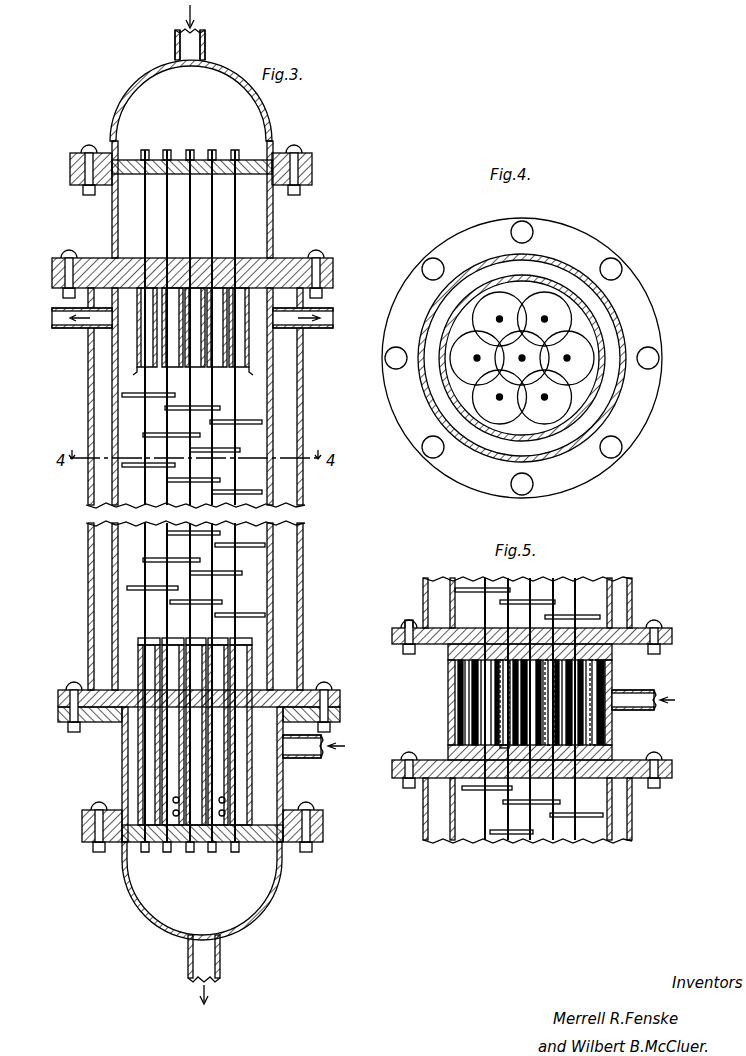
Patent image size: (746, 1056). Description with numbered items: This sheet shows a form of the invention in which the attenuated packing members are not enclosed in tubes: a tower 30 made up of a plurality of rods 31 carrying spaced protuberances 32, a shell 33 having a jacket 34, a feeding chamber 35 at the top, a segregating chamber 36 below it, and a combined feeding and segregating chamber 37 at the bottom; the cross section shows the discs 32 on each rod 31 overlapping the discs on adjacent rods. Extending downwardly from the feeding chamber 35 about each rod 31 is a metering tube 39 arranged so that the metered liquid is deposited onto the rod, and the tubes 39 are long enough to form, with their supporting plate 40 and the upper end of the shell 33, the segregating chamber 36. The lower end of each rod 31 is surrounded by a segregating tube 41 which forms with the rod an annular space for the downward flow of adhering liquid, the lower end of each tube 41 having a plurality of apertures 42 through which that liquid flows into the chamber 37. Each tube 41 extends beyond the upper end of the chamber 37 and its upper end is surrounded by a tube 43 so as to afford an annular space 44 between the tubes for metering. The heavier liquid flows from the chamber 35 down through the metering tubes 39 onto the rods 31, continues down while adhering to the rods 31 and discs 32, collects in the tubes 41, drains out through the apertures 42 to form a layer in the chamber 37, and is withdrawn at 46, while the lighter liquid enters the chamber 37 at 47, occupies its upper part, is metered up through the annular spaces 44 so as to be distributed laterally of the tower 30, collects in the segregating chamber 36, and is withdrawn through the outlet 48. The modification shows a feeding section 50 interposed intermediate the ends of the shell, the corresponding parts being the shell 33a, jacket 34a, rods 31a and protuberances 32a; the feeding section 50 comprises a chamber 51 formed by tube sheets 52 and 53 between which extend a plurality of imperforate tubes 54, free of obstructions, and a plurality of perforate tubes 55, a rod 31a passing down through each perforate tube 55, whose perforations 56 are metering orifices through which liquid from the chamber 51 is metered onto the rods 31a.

In FIG. 3, the tower 30 is at (303, 528).
In FIG. 4, the tower 30 is at (647, 276).
In FIG. 3, the rods 31 is at (145, 568).
In FIG. 4, the rods 31 is at (499, 398).
In FIG. 3, the protuberances 32 is at (258, 610).
In FIG. 4, the protuberances 32 is at (462, 332).
In FIG. 3, the shell 33 is at (272, 442).
In FIG. 4, the shell 33 is at (446, 392).
In FIG. 3, the jacket 34 is at (303, 396).
In FIG. 4, the jacket 34 is at (618, 416).
In FIG. 3, the feeding chamber 35 is at (255, 233).
In FIG. 3, the segregating chamber 36 is at (262, 363).
In FIG. 3, the combined feeding and segregating chamber 37 is at (125, 745).
In FIG. 3, the metering tube 39 is at (133, 364).
In FIG. 3, the supporting plate 40 is at (52, 281).
In FIG. 3, the segregating tube 41 is at (235, 775).
In FIG. 3, the apertures 42 is at (173, 813).
In FIG. 3, the tube 43 is at (138, 672).
In FIG. 3, the annular space 44 is at (140, 641).
In FIG. 3, the heavier liquid outlet 46 is at (222, 956).
In FIG. 3, the lighter liquid inlet 47 is at (312, 760).
In FIG. 3, the outlet 48 is at (325, 325).
In FIG. 5, the rods 31a is at (485, 580).
In FIG. 5, the protuberances 32a is at (530, 600).
In FIG. 5, the shell 33a is at (612, 607).
In FIG. 5, the jacket 34a is at (632, 582).
In FIG. 5, the feeding section 50 is at (449, 698).
In FIG. 5, the chamber 51 is at (608, 683).
In FIG. 5, the tube sheet 52 is at (555, 660).
In FIG. 5, the tube sheet 53 is at (592, 760).
In FIG. 5, the imperforate tubes 54 is at (508, 695).
In FIG. 5, the perforate tubes 55 is at (540, 735).
In FIG. 5, the perforations 56 is at (500, 720).